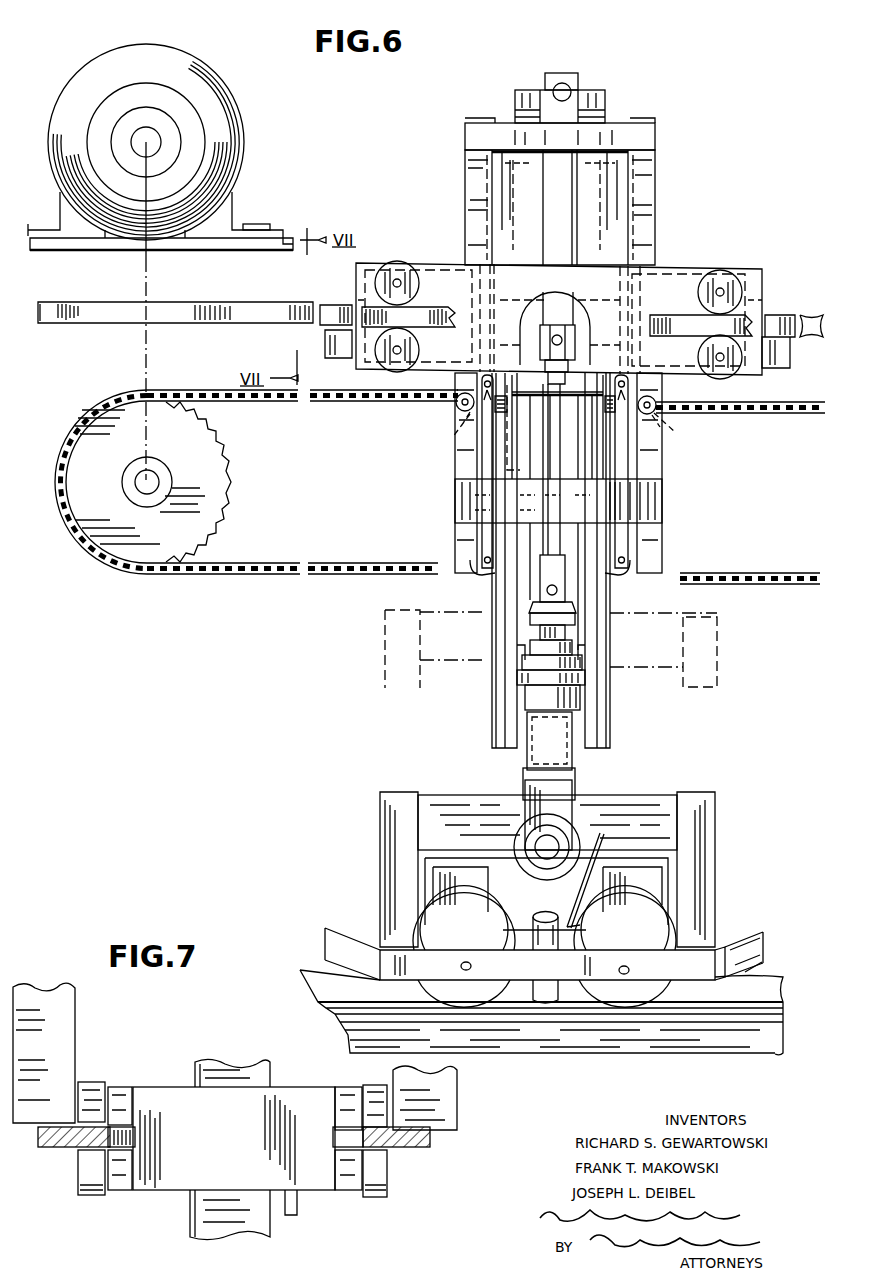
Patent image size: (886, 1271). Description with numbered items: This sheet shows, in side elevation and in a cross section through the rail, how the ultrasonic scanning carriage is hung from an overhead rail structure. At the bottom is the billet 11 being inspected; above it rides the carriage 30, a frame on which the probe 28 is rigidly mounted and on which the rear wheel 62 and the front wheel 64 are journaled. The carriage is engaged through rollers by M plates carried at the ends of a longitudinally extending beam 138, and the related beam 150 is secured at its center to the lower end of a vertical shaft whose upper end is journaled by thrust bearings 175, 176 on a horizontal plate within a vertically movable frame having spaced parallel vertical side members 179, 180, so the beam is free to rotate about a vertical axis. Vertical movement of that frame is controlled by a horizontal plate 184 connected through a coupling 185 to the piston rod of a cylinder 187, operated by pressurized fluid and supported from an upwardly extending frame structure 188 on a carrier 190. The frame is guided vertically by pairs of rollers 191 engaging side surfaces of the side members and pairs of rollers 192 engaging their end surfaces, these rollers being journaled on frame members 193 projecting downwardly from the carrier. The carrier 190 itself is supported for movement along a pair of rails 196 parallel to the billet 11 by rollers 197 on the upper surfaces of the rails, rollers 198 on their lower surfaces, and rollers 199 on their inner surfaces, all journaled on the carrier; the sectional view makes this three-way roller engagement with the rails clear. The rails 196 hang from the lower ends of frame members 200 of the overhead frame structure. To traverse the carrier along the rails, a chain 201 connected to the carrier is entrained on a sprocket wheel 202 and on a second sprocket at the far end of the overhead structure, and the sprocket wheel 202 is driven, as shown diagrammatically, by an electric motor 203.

In FIG. 6, the billet 11 is at (776, 982).
In FIG. 6, the probe 28 is at (534, 914).
In FIG. 6, the carriage 30 is at (672, 896).
In FIG. 6, the rear wheel 62 is at (498, 990).
In FIG. 6, the front wheel 64 is at (625, 988).
In FIG. 6, the longitudinally extending beam 138 is at (660, 800).
In FIG. 6, the beam 150 is at (527, 750).
In FIG. 6, the thrust bearing 175 is at (584, 667).
In FIG. 6, the thrust bearing 176 is at (588, 700).
In FIG. 6, the vertical side member 179 is at (493, 696).
In FIG. 6, the vertical side member 180 is at (612, 730).
In FIG. 6, the horizontal plate 184 is at (566, 620).
In FIG. 6, the coupling 185 is at (538, 598).
In FIG. 6, the cylinder 187 is at (572, 314).
In FIG. 6, the upwardly extending frame structure 188 is at (658, 193).
In FIG. 6, the carrier 190 is at (684, 267).
In FIG. 7, the carrier 190 is at (305, 1087).
In FIG. 6, the rollers 191 is at (548, 384).
In FIG. 6, the rollers 192 is at (455, 410).
In FIG. 6, the frame members 193 is at (448, 530).
In FIG. 6, the rails 196 is at (268, 325).
In FIG. 7, the rails 196 is at (68, 1148).
In FIG. 6, the rollers 197 is at (397, 261).
In FIG. 7, the rollers 197 is at (370, 1105).
In FIG. 6, the rollers 198 is at (390, 370).
In FIG. 7, the rollers 198 is at (92, 1197).
In FIG. 6, the rollers 199 is at (330, 305).
In FIG. 7, the rollers 199 is at (333, 1141).
In FIG. 7, the frame members 200 is at (65, 1038).
In FIG. 6, the chain 201 is at (303, 563).
In FIG. 6, the sprocket wheel 202 is at (225, 494).
In FIG. 6, the electric motor 203 is at (238, 150).